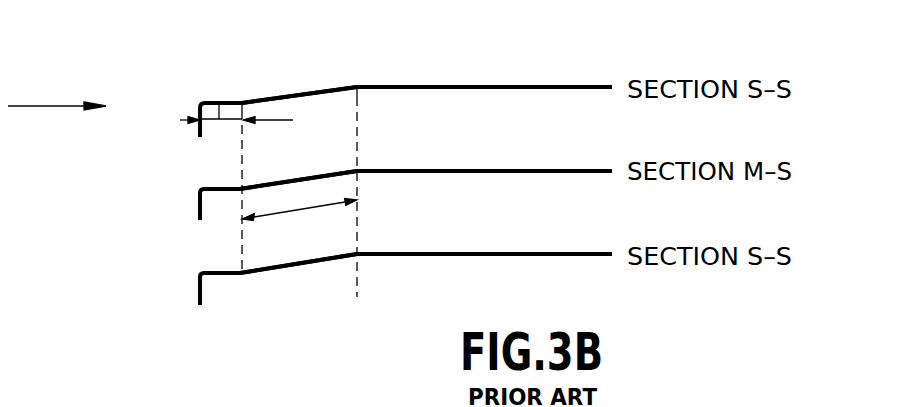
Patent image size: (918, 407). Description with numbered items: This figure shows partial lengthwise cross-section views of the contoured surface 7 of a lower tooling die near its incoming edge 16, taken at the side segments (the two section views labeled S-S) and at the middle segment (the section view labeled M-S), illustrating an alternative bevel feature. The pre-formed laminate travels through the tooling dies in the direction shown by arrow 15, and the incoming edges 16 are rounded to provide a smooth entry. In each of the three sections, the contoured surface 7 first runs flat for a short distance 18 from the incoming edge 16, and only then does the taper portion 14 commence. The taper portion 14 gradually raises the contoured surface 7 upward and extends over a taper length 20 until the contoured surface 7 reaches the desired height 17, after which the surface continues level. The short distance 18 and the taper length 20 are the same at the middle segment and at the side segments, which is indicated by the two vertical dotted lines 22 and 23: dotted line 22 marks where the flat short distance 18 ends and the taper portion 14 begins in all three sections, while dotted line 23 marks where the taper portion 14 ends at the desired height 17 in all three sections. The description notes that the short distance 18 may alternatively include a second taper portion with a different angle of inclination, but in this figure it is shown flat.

The second contoured surface 7 is at (513, 87).
The taper portion 14 is at (263, 100).
The arrow 15 is at (43, 105).
The incoming edge 16 is at (200, 191).
The desired height 17 is at (357, 86).
The short distance 18 is at (219, 103).
The taper length 20 is at (298, 210).
The dotted line 22 is at (241, 275).
The dotted line 23 is at (358, 138).